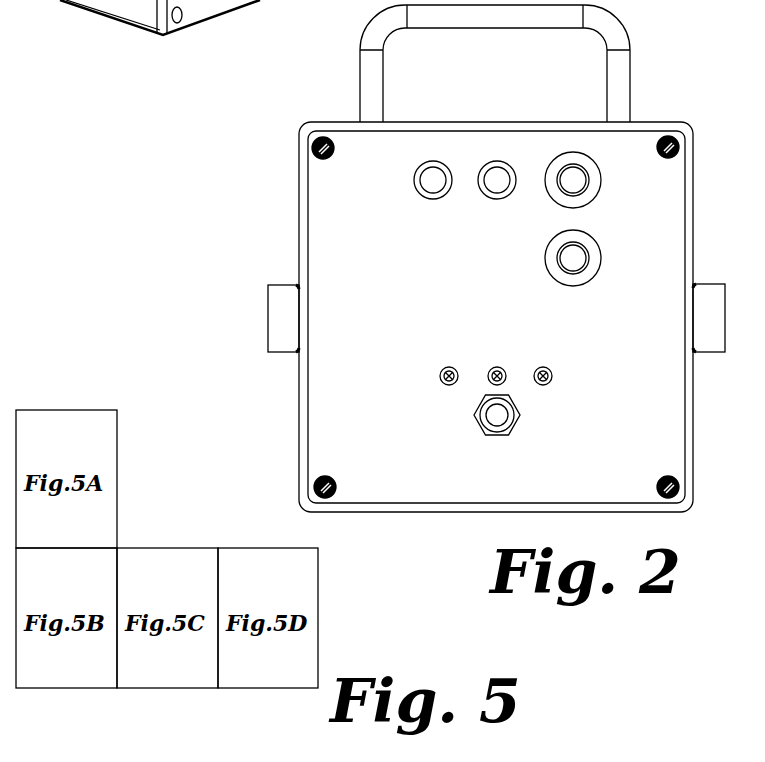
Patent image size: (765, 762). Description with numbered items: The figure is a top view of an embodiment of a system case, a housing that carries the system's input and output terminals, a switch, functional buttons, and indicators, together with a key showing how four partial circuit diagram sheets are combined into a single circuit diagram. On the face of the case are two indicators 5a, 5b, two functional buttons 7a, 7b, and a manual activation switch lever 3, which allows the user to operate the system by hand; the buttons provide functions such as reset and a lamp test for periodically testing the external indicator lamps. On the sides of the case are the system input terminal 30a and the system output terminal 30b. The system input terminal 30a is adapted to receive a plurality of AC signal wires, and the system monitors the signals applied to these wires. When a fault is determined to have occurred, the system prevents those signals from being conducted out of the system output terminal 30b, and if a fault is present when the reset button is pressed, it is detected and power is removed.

The manual activation switch lever 3 is at (503, 421).
The indicator 5a is at (573, 178).
The indicator 5b is at (573, 262).
The button 7a is at (433, 183).
The button 7b is at (497, 178).
The system input terminal 30a is at (720, 284).
The system output terminal 30b is at (268, 308).